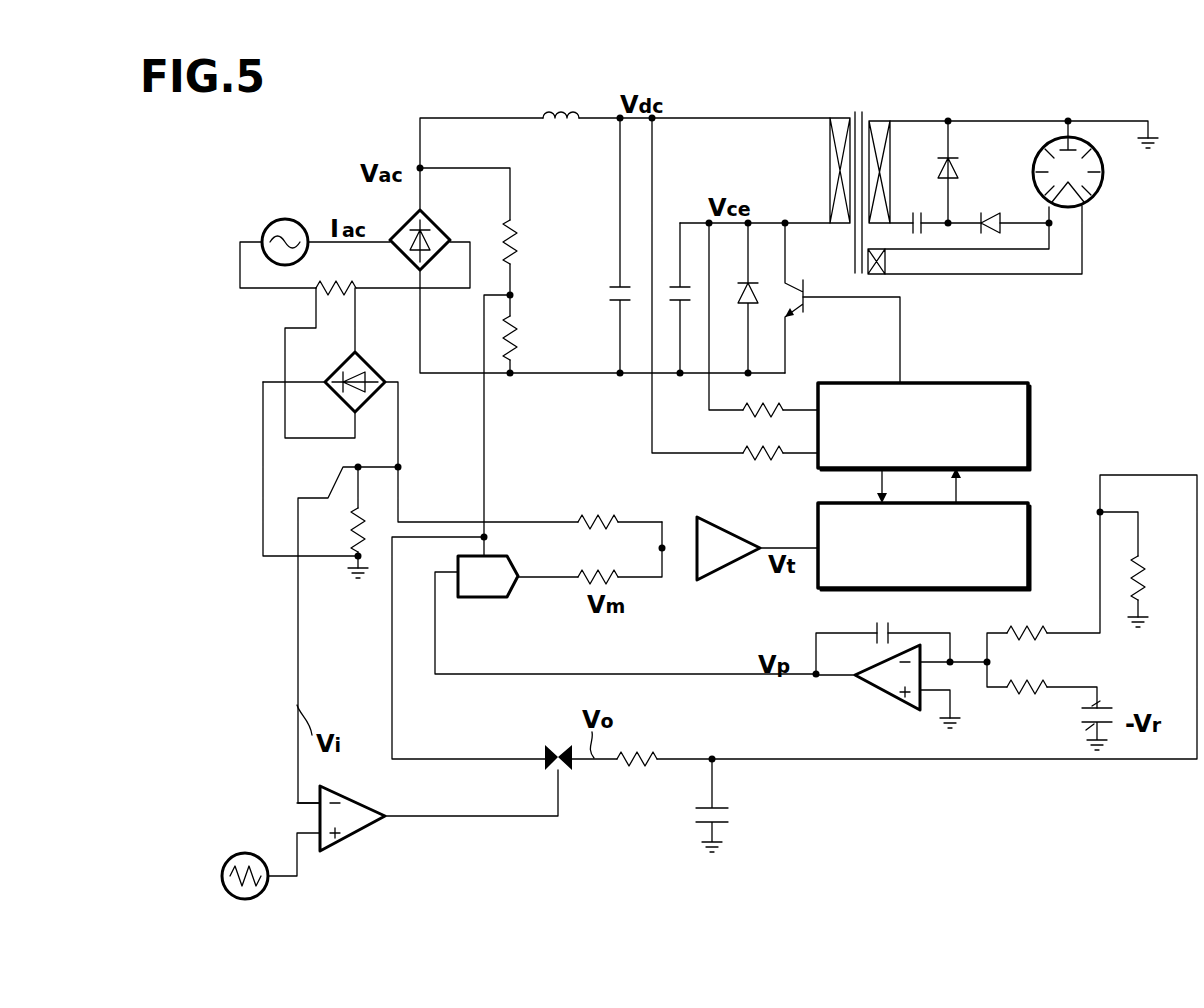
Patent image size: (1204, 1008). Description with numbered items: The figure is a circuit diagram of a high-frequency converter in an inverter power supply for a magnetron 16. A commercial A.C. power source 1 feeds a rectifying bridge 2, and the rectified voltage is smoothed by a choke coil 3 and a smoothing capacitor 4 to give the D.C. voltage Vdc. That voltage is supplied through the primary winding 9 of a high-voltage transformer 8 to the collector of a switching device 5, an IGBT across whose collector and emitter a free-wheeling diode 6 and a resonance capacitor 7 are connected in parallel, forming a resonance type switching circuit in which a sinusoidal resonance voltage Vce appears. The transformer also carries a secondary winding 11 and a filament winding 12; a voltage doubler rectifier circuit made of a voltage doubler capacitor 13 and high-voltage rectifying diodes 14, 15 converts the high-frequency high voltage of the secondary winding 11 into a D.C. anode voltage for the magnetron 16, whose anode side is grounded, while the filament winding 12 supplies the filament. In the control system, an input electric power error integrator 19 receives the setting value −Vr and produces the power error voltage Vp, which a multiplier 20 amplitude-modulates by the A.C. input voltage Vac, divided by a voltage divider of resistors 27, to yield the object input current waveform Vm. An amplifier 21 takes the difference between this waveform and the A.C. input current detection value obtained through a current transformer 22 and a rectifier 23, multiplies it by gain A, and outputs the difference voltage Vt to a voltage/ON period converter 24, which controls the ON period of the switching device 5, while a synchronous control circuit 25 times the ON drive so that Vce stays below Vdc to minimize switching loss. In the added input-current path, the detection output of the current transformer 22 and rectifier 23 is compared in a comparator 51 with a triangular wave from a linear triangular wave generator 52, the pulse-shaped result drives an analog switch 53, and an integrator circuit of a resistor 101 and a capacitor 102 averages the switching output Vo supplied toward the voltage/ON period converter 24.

The commercial A.C. power source 1 is at (266, 215).
The rectifying bridge 2 is at (438, 225).
The choke coil 3 is at (572, 116).
The smoothing capacitor 4 is at (612, 292).
The switching device 5 is at (806, 283).
The free-wheeling diode 6 is at (756, 284).
The resonance capacitor 7 is at (676, 292).
The high-voltage transformer 8 is at (860, 116).
The primary winding 9 is at (830, 150).
The secondary winding 11 is at (890, 143).
The filament winding 12 is at (870, 276).
The voltage doubler capacitor 13 is at (917, 212).
The high-voltage rectifying diode 14 is at (958, 168).
The high-voltage rectifying diode 15 is at (990, 198).
The magnetron 16 is at (1102, 182).
The input electric power error integrator 19 is at (878, 700).
The multiplier 20 is at (470, 598).
The amplifier 21 is at (707, 578).
The current transformer 22 is at (316, 290).
The rectifier 23 is at (362, 352).
The voltage/ON period converter 24 is at (1003, 503).
The synchronous control circuit 25 is at (1005, 383).
The resistors 27 is at (538, 232).
The comparator 51 is at (366, 827).
The linear triangular wave generator 52 is at (226, 856).
The analog switch 53 is at (547, 770).
The resistor 101 is at (655, 750).
The capacitor 102 is at (730, 812).